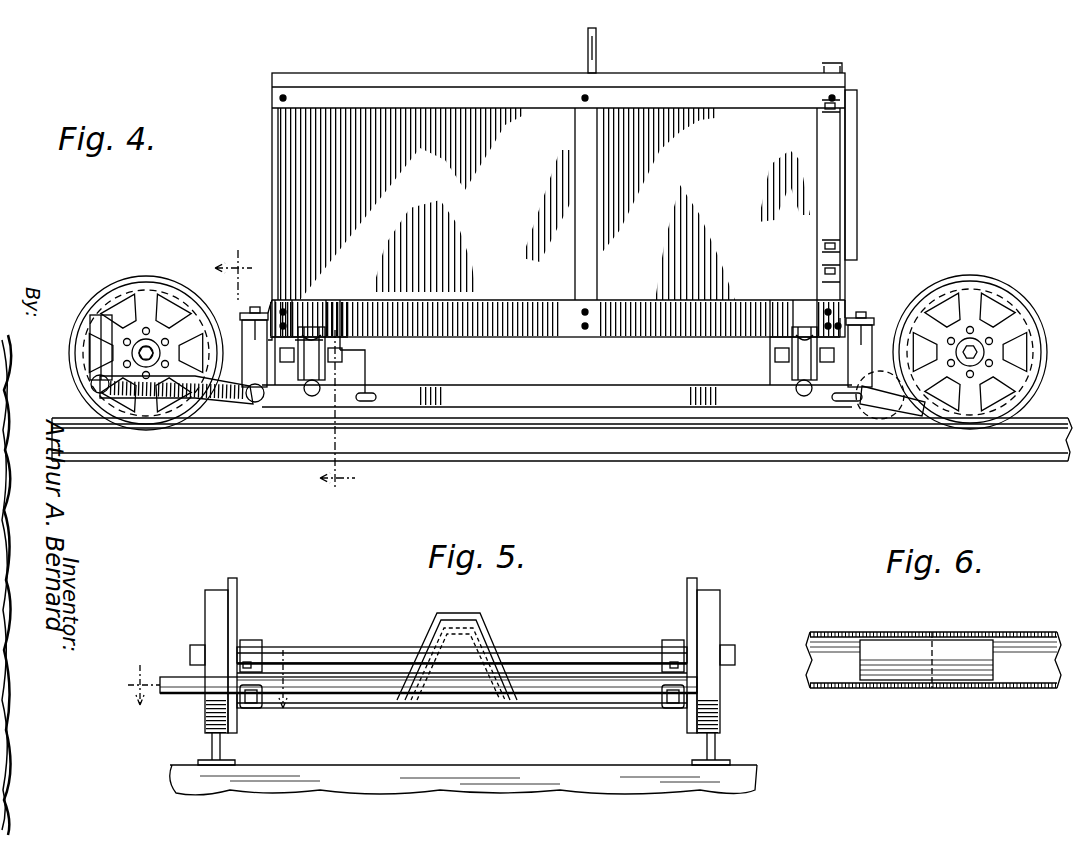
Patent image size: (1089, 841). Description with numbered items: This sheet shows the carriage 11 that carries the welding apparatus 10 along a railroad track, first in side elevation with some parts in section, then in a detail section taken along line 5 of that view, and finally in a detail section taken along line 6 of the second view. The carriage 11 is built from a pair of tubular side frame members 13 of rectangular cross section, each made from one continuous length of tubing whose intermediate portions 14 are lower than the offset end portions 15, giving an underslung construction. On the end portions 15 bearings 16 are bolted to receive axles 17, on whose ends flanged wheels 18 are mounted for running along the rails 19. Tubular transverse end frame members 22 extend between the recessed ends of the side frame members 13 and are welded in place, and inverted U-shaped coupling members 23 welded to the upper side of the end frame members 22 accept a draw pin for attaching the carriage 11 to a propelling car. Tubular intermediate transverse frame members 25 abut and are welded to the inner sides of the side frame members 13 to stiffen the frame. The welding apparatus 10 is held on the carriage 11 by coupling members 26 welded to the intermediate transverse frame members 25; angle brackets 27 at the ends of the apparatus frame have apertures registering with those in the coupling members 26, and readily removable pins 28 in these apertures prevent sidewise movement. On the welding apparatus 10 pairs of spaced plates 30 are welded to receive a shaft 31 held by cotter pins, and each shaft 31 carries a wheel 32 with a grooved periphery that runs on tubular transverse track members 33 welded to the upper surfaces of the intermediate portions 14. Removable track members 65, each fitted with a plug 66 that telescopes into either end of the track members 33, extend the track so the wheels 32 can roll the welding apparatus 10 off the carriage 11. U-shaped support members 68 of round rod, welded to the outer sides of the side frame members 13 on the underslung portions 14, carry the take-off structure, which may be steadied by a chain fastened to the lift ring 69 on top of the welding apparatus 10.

In FIG. 4, the section line 5- 5 is at (285, 369).
In FIG. 5, the section line 6- 6 is at (207, 669).
In FIG. 4, the welding apparatus 10 is at (888, 101).
In FIG. 4, the carriage 11 is at (920, 275).
In FIG. 4, the side frame members 13 is at (366, 384).
In FIG. 5, the side frame members 13 is at (252, 708).
In FIG. 4, the intermediate portions 14 is at (478, 386).
In FIG. 4, the end portions 15 is at (140, 398).
In FIG. 5, the bearings 16 is at (250, 640).
In FIG. 4, the axles 17 is at (147, 345).
In FIG. 5, the axles 17 is at (350, 647).
In FIG. 4, the flanged wheels 18 is at (128, 288).
In FIG. 5, the flanged wheels 18 is at (205, 600).
In FIG. 4, the rails 19 is at (1045, 420).
In FIG. 5, the rails 19 is at (212, 748).
In FIG. 4, the transverse end frame members 22 is at (92, 392).
In FIG. 4, the coupling members 23 is at (92, 322).
In FIG. 5, the coupling members 23 is at (485, 620).
In FIG. 4, the intermediate transverse frame members 25 is at (254, 402).
In FIG. 5, the intermediate transverse frame members 25 is at (608, 706).
In FIG. 4, the coupling members 26 is at (252, 332).
In FIG. 5, the coupling members 26 is at (498, 645).
In FIG. 4, the angle brackets 27 is at (272, 300).
In FIG. 4, the pins 28 is at (244, 312).
In FIG. 4, the plates 30 is at (290, 305).
In FIG. 4, the shaft 31 is at (335, 360).
In FIG. 4, the wheels 32 is at (320, 340).
In FIG. 4, the track members 33 is at (308, 396).
In FIG. 5, the track members 33 is at (550, 706).
In FIG. 6, the track members 33 is at (1022, 632).
In FIG. 5, the removable track members 65 is at (172, 691).
In FIG. 6, the removable track members 65 is at (838, 632).
In FIG. 6, the plug 66 is at (875, 680).
In FIG. 4, the support members 68 is at (366, 401).
In FIG. 4, the lift ring 69 is at (586, 46).